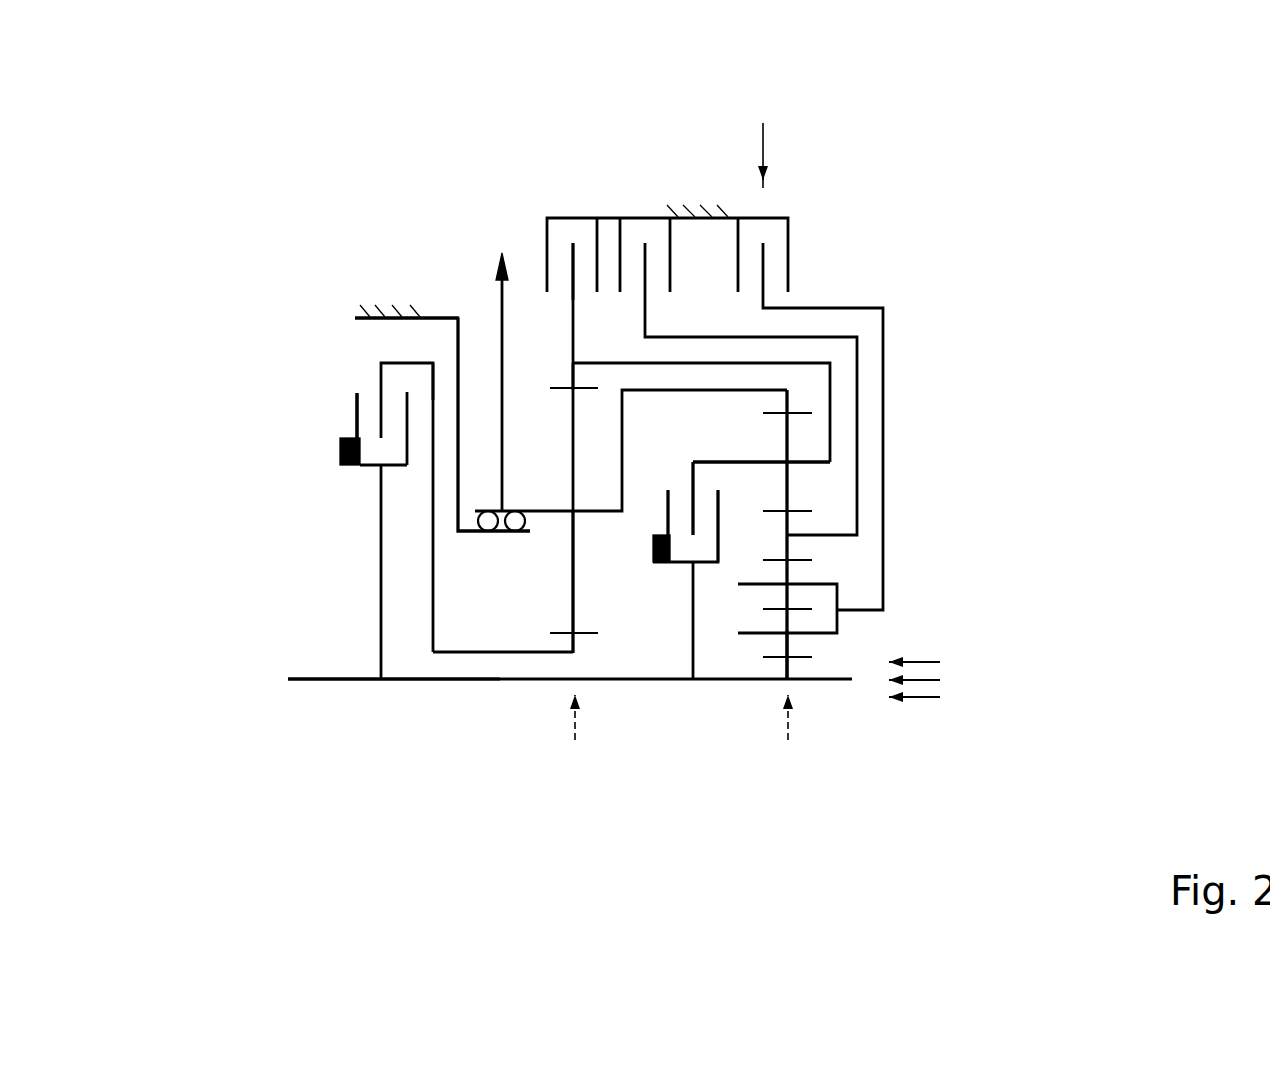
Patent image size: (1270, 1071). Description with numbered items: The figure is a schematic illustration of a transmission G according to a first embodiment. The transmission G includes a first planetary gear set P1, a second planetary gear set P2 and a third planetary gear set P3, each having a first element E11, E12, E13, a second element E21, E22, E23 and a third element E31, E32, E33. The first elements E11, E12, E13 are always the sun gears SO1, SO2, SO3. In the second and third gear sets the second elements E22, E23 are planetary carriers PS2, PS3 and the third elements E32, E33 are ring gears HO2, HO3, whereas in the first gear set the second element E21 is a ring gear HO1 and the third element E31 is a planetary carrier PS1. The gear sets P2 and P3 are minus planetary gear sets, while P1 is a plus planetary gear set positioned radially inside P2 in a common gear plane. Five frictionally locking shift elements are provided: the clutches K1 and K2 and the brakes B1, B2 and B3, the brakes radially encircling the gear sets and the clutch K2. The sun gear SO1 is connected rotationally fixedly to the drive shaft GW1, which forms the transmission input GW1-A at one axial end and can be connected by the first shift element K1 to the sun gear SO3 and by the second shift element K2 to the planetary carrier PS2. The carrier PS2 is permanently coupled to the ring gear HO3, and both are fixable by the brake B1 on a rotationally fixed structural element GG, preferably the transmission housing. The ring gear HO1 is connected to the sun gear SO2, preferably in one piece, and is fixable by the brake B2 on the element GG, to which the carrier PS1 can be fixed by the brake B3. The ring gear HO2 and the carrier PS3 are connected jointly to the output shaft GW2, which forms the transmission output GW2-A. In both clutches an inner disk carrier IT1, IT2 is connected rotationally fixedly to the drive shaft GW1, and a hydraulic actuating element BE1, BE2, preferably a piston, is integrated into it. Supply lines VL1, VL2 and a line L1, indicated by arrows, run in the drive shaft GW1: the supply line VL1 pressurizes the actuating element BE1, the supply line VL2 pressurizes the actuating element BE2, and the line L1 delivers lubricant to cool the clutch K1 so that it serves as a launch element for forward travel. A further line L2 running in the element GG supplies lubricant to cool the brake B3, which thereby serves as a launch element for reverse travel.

The transmission G is at (300, 245).
The rotationally fixed structural element GG is at (698, 207).
The drive shaft GW1 is at (322, 680).
The transmission input GW1-A is at (277, 678).
The output shaft GW2 is at (528, 510).
The transmission output GW2-A is at (498, 250).
The planetary carrier of the first planetary gear set PS1 is at (838, 622).
The planetary carrier of the second planetary gear set PS2 is at (817, 462).
The planetary carrier of the third planetary gear set PS3 is at (565, 513).
The sun gear of the first planetary gear set SO1 is at (790, 663).
The sun gear of the second planetary gear set SO2 is at (787, 520).
The sun gear of the third planetary gear set SO3 is at (563, 652).
The ring gear of the first planetary gear set HO1 is at (790, 543).
The ring gear of the second planetary gear set HO2 is at (775, 462).
The ring gear of the third planetary gear set HO3 is at (572, 372).
The first planetary gear set P1 is at (788, 740).
The second planetary gear set P2 is at (850, 455).
The third planetary gear set P3 is at (571, 741).
The first element of the first planetary gear set E11 is at (787, 668).
The first element of the second planetary gear set E12 is at (793, 525).
The first element of the third planetary gear set E13 is at (653, 543).
The second element of the first planetary gear set E21 is at (790, 554).
The second element of the second planetary gear set E22 is at (800, 462).
The second element of the third planetary gear set E23 is at (560, 515).
The third element of the first planetary gear set E31 is at (838, 597).
The third element of the second planetary gear set E32 is at (768, 462).
The third element of the third planetary gear set E33 is at (570, 380).
The third shift element B1 is at (572, 214).
The fourth shift element B2 is at (643, 214).
The fifth shift element B3 is at (780, 212).
The first shift element K1 is at (350, 387).
The second shift element K2 is at (705, 485).
The inner disk carrier of the first shift element IT1 is at (355, 425).
The inner disk carrier of the second shift element IT2 is at (717, 522).
The hydraulic actuating element of the first shift element BE1 is at (340, 452).
The hydraulic actuating element of the second shift element BE2 is at (607, 512).
The line L1 is at (917, 700).
The further line L2 is at (762, 150).
The supply line VL1 is at (940, 662).
The supply line VL2 is at (940, 680).